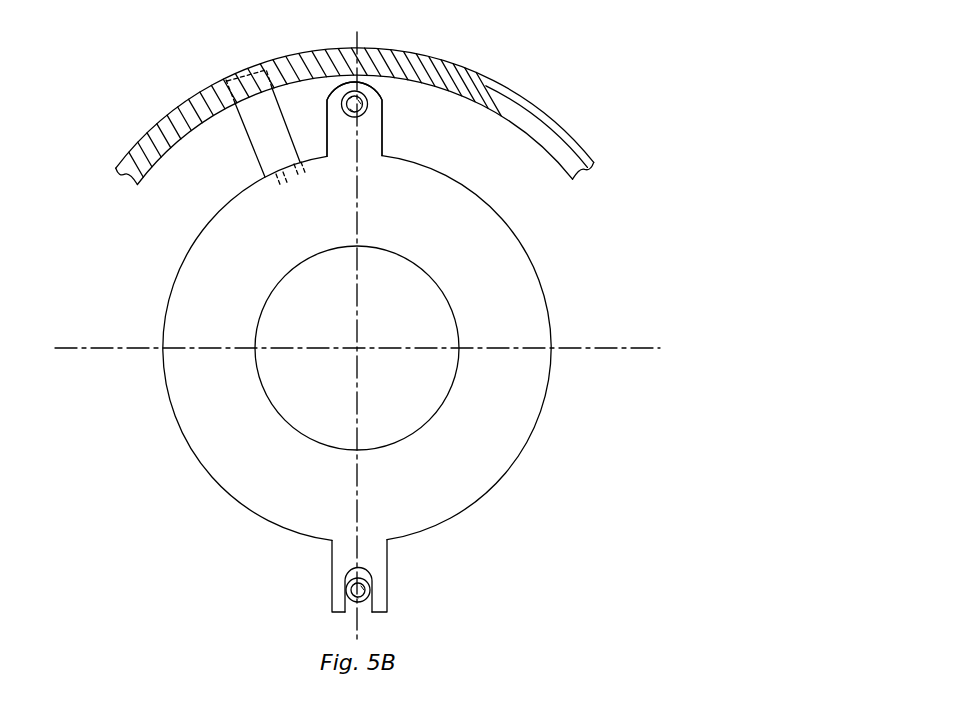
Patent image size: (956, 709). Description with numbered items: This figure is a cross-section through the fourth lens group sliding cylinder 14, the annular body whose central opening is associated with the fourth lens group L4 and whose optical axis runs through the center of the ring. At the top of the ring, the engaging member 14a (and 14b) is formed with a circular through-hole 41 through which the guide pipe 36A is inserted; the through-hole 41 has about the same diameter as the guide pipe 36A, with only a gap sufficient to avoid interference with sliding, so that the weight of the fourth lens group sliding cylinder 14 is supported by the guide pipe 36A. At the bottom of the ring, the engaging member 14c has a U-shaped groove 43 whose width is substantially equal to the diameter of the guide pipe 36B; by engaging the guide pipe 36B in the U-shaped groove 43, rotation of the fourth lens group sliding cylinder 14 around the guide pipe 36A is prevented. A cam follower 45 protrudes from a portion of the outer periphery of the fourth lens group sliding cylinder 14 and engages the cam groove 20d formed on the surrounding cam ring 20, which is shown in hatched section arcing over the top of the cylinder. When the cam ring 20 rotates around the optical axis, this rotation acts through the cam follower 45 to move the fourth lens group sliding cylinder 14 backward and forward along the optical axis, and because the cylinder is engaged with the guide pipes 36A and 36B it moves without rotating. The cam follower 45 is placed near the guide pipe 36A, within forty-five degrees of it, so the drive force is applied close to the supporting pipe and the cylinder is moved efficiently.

The fourth lens group sliding cylinder 14 is at (166, 291).
The engaging member 14a is at (383, 115).
The engaging member 14b is at (354, 119).
The engaging member 14c is at (388, 556).
The cam ring 20 is at (127, 163).
The cam groove 20d is at (237, 82).
The guide pipe 36A is at (285, 57).
The guide pipe 36B is at (345, 591).
The circular through-hole 41 is at (378, 110).
The U-shaped groove 43 is at (372, 610).
The cam follower 45 is at (252, 120).
The fourth lens group L4 is at (432, 302).